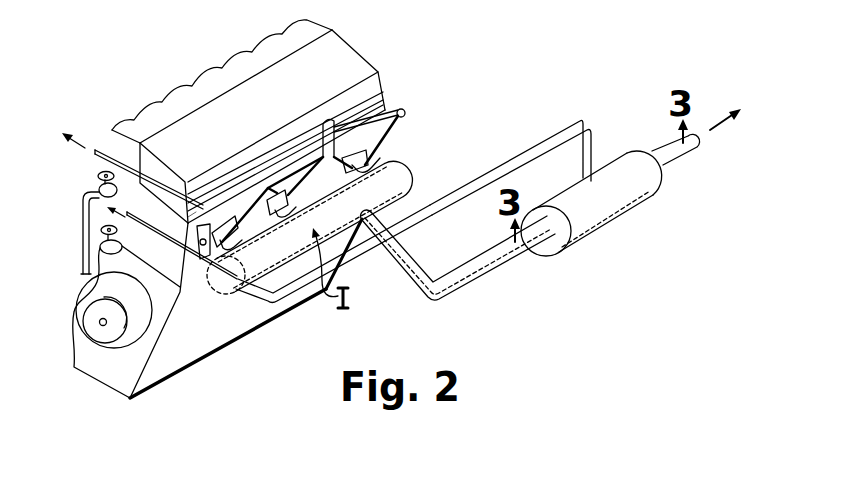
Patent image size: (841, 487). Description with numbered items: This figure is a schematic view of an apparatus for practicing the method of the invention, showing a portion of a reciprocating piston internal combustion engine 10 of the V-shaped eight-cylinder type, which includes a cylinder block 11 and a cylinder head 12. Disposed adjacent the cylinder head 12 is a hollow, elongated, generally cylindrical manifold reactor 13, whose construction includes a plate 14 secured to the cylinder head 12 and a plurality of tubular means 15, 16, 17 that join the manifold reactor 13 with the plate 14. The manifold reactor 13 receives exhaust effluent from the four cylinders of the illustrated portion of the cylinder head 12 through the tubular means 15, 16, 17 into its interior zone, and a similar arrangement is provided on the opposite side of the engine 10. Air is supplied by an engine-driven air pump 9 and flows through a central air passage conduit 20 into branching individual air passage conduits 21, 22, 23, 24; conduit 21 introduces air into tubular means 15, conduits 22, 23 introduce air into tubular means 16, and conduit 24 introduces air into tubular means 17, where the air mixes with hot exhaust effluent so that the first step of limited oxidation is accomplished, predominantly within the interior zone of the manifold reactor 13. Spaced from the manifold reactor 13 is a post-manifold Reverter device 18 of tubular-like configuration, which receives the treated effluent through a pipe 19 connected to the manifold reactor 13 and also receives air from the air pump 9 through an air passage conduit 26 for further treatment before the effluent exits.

The air pump 9 is at (180, 292).
The internal combustion engine 10 is at (362, 44).
The cylinder block 11 is at (143, 367).
The cylinder head 12 is at (154, 207).
The manifold reactor 13 is at (411, 176).
The plate 14 is at (212, 195).
The tubular means 15 is at (197, 262).
The tubular means 16 is at (272, 304).
The tubular means 17 is at (386, 158).
The post-manifold Reverter device 18 is at (560, 195).
The pipe 19 is at (400, 243).
The central air passage conduit 20 is at (313, 145).
The air passage conduit 21 is at (243, 260).
The air passage conduit 22 is at (307, 190).
The air passage conduit 23 is at (300, 170).
The air passage conduit 24 is at (406, 113).
The air passage conduit 26 is at (590, 124).